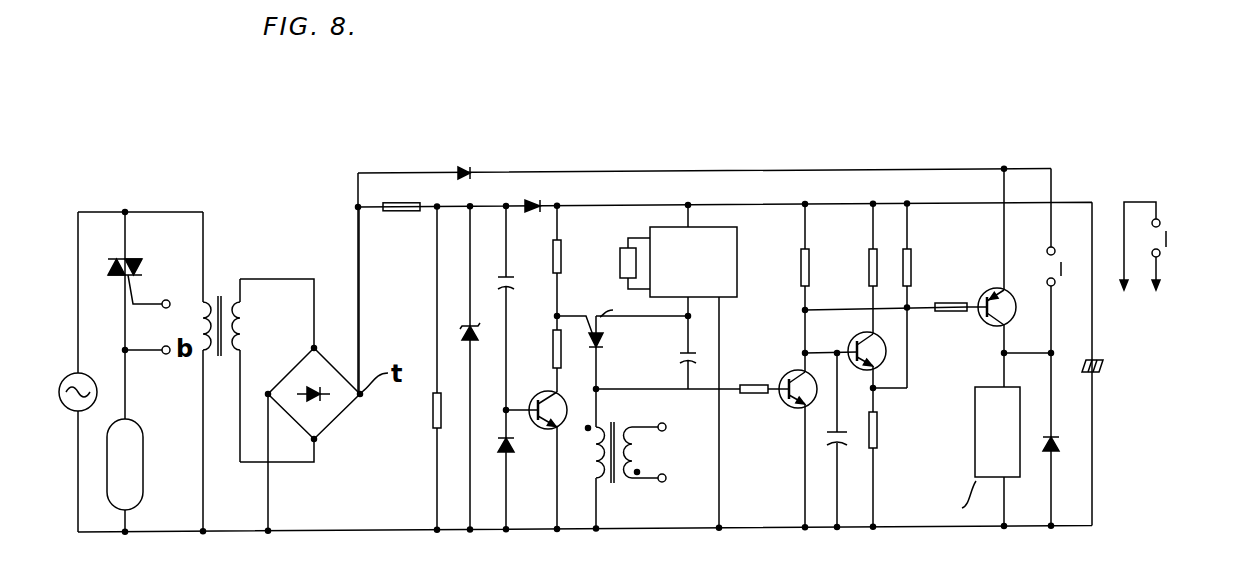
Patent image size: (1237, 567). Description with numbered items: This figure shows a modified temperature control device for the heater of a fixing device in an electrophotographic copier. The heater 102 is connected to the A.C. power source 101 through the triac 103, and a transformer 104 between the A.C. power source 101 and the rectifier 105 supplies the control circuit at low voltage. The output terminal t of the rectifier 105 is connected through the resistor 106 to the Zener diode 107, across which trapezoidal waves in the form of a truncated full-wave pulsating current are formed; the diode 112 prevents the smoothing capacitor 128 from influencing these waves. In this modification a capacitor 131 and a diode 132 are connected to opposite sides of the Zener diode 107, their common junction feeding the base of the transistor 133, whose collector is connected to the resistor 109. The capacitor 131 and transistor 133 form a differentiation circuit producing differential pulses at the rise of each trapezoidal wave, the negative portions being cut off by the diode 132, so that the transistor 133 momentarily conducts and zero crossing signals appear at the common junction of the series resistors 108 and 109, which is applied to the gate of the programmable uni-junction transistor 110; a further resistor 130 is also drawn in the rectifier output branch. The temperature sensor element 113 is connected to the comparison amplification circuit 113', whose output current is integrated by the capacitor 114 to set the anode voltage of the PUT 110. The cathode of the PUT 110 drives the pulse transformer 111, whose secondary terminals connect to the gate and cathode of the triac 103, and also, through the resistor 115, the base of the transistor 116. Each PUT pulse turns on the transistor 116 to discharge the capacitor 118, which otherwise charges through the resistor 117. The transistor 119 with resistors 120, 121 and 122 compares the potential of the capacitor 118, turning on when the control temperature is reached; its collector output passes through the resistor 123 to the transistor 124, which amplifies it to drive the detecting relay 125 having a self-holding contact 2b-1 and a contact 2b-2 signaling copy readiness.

The A.C. power source 101 is at (68, 378).
The heater 102 is at (138, 432).
The triac 103 is at (134, 258).
The transformer 104 is at (206, 303).
The rectifier 105 is at (337, 420).
The resistor 106 is at (410, 203).
The Zener diode 107 is at (465, 325).
The resistor 108 is at (562, 254).
The resistor 109 is at (554, 343).
The programmable uni-junction transistor 110 is at (604, 340).
The pulse transformer 111 is at (633, 481).
The diode 112 is at (536, 200).
The temperature sensor element 113 is at (636, 209).
The comparison amplification circuit 113' is at (710, 329).
The capacitor 114 is at (687, 368).
The resistor 115 is at (756, 385).
The transistor 116 is at (786, 400).
The resistor 117 is at (812, 270).
The capacitor 118 is at (843, 447).
The transistor 119 is at (856, 340).
The resistor 120 is at (872, 248).
The resistor 121 is at (880, 424).
The resistor 122 is at (910, 248).
The resistor 123 is at (953, 302).
The transistor 124 is at (984, 318).
The detecting relay 125 is at (975, 440).
The smoothing capacitor 128 is at (1095, 373).
The resistor 130 is at (432, 405).
The capacitor 131 is at (510, 278).
The diode 132 is at (512, 450).
The transistor 133 is at (537, 396).
The contact 2b-1 is at (1062, 262).
The contact 2b-2 is at (1170, 240).